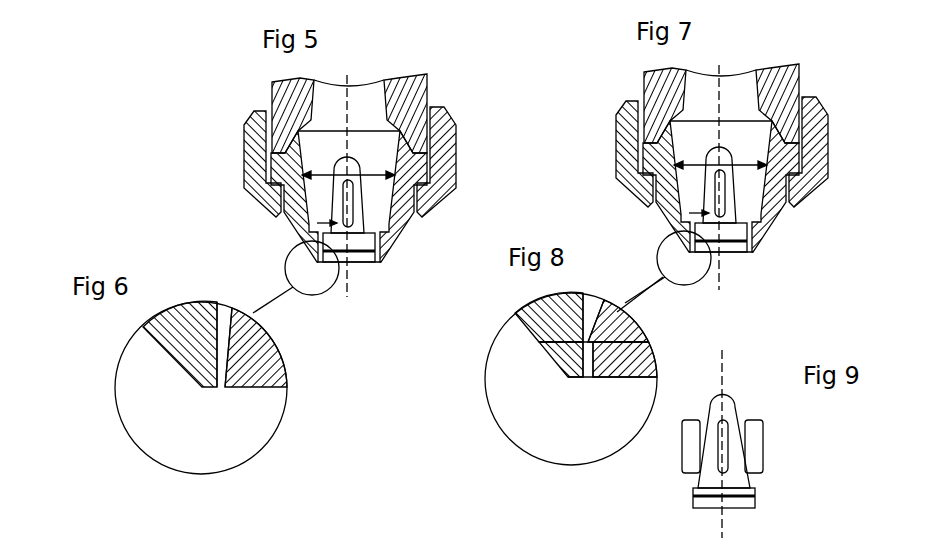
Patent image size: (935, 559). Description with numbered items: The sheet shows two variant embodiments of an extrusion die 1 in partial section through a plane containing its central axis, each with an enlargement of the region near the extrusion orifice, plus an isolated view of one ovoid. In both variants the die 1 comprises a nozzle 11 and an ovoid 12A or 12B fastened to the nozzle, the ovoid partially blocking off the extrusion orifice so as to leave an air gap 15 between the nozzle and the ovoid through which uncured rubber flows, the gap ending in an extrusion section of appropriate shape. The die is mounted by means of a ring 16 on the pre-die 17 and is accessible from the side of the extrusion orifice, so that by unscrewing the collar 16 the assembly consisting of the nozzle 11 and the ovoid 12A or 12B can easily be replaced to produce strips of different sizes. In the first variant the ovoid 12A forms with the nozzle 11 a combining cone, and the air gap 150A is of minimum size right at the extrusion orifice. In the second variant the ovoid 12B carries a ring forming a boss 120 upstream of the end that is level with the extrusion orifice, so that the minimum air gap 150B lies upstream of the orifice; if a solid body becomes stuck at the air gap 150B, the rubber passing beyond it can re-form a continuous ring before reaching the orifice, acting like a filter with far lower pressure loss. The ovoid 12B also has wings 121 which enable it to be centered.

In FIG. 5, the die 1 is at (473, 125).
In FIG. 5, the nozzle 11 is at (291, 197).
In FIG. 7, the nozzle 11 is at (773, 218).
In FIG. 6, the nozzle 11 is at (183, 350).
In FIG. 5, the ovoid 12A is at (284, 232).
In FIG. 6, the ovoid 12A is at (263, 348).
In FIG. 9, the ovoid 12B is at (727, 403).
In FIG. 8, the air gap 15 is at (570, 380).
In FIG. 5, the ring 16 is at (250, 138).
In FIG. 5, the pre-die 17 is at (272, 83).
In FIG. 8, the boss 120 is at (640, 342).
In FIG. 9, the wings 121 is at (752, 440).
In FIG. 6, the air gap 150A is at (213, 390).
In FIG. 8, the air gap 150B is at (547, 343).